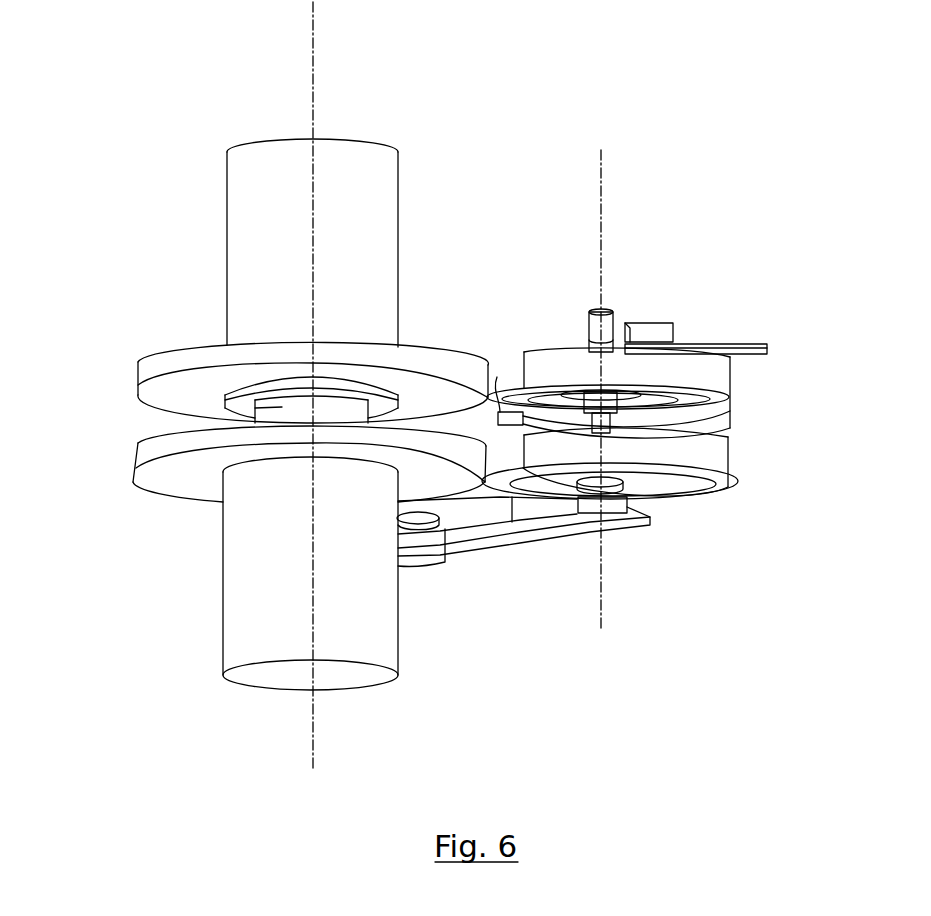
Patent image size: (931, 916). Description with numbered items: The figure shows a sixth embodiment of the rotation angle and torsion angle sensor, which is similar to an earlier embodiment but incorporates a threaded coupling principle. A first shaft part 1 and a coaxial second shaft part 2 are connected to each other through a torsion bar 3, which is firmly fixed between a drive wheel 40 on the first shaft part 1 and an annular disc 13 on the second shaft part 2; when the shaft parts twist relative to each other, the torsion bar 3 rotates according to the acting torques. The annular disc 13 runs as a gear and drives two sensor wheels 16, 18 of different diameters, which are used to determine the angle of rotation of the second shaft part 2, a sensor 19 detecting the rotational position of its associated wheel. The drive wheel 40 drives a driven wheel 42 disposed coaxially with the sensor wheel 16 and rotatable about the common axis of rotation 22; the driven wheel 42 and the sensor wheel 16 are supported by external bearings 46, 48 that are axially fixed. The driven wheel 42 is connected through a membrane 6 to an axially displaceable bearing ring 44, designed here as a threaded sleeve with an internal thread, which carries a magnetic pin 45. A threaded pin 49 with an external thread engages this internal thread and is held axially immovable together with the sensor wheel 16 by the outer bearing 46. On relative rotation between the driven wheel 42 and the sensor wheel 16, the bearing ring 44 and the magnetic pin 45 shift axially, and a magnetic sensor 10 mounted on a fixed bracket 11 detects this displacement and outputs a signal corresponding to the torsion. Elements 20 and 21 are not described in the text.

The first shaft part 1 is at (260, 180).
The second shaft part 2 is at (251, 634).
The torsion bar 3 is at (268, 419).
The membrane 6 is at (548, 392).
The magnetic sensor 10 is at (667, 323).
The fixed bracket 11 is at (747, 343).
The annular disc 13 is at (132, 482).
The sensor wheel 16 is at (680, 483).
The sensor wheel 18 is at (463, 517).
The sensor 19 is at (597, 502).
The bar 20 is at (522, 550).
The first axis 21 is at (308, 22).
The axis of rotation 22 is at (608, 190).
The drive wheel 40 is at (140, 378).
The driven wheel 42 is at (497, 377).
The bearing ring 44 is at (731, 400).
The magnetic pin 45 is at (590, 328).
The outer bearing 46 is at (735, 478).
The external bearing 48 is at (740, 386).
The threaded pin 49 is at (735, 422).